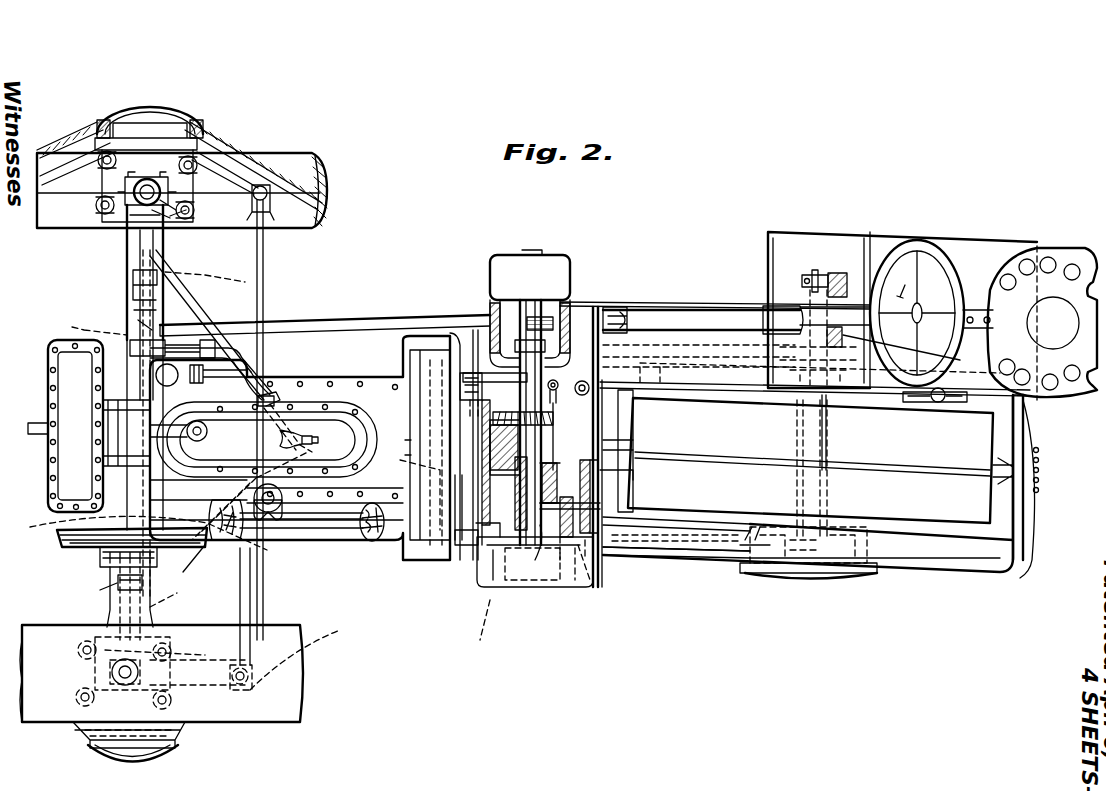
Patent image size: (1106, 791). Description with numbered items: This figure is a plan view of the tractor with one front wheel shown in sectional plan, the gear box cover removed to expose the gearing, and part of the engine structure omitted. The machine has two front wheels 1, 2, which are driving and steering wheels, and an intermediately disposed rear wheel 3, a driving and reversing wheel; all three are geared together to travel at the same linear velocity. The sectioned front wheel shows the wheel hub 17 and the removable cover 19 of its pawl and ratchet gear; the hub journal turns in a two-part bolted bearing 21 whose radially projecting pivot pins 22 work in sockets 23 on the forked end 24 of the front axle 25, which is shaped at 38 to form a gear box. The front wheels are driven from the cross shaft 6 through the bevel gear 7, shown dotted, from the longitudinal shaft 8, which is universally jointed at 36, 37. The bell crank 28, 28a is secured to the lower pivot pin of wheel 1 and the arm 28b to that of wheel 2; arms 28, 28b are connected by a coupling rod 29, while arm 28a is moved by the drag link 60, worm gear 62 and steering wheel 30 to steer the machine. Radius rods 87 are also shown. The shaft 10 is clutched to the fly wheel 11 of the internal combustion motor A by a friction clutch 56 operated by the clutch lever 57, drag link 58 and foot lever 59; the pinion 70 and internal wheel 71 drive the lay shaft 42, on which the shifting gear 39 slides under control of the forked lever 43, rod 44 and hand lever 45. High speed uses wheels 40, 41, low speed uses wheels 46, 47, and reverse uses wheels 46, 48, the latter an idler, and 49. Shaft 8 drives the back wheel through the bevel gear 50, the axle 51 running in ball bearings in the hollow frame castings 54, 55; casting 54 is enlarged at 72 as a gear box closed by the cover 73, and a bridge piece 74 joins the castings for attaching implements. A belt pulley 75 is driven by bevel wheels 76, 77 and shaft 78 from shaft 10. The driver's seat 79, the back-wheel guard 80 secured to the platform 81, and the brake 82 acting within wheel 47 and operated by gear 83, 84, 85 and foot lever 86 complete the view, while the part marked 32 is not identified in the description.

The front wheel 1 is at (318, 225).
The front wheel 2 is at (285, 697).
The rear wheel 3 is at (948, 455).
The cross shaft 6 is at (137, 337).
The bevel gear 7 is at (147, 541).
The longitudinal shaft 8 is at (355, 540).
The shaft 10 is at (458, 545).
The fly wheel 11 is at (420, 535).
The wheel hub 17 is at (200, 132).
The removable cover 19 is at (160, 112).
The bearing 21 is at (146, 186).
The pivot pins 22 is at (160, 208).
The sockets 23 is at (133, 200).
The forked end 24 is at (128, 240).
The front axle 25 is at (172, 318).
The bell crank arm 28 is at (237, 225).
The bell crank arm 28a is at (206, 281).
The arm 28b is at (305, 651).
The coupling rod 29 is at (252, 602).
The steering wheel 30 is at (930, 262).
The side housing 32 is at (122, 430).
The universal joint 36 is at (243, 536).
The universal joint 37 is at (368, 545).
The gear box 38 is at (92, 545).
The shifting gear 39 is at (568, 460).
The gear wheel 40 is at (585, 444).
The gear wheel 41 is at (483, 635).
The lay shaft 42 is at (615, 500).
The forked lever 43 is at (535, 562).
The rod 44 is at (692, 392).
The hand lever 45 is at (940, 402).
The gear wheel 46 is at (625, 470).
The gear wheel 47 is at (580, 600).
The idler wheel 48 is at (660, 482).
The gear wheel 49 is at (600, 587).
The bevel gear 50 is at (760, 570).
The axle 51 is at (812, 477).
The frame casting 54 is at (950, 568).
The frame casting 55 is at (705, 380).
The friction clutch 56 is at (450, 440).
The clutch lever 57 is at (466, 400).
The drag link 58 is at (645, 340).
The foot lever 59 is at (820, 354).
The drag link 60 is at (340, 328).
The worm gear 62 is at (562, 302).
The pinion 70 is at (527, 438).
The internal wheel 71 is at (500, 560).
The gear box enlargement 72 is at (855, 580).
The gear box cover 73 is at (810, 575).
The bridge piece 74 is at (1030, 520).
The belt pulley 75 is at (500, 272).
The bevel wheel 76 is at (475, 545).
The bevel wheel 77 is at (556, 424).
The shaft 78 is at (490, 300).
The driver's seat 79 is at (1043, 323).
The guard 80 is at (868, 405).
The platform 81 is at (902, 310).
The brake 82 is at (554, 600).
The brake gear 83 is at (540, 560).
The brake gear 84 is at (588, 396).
The brake gear 85 is at (687, 320).
The foot lever 86 is at (842, 272).
The radius rods 87 is at (262, 356).
The internal combustion motor A is at (300, 448).